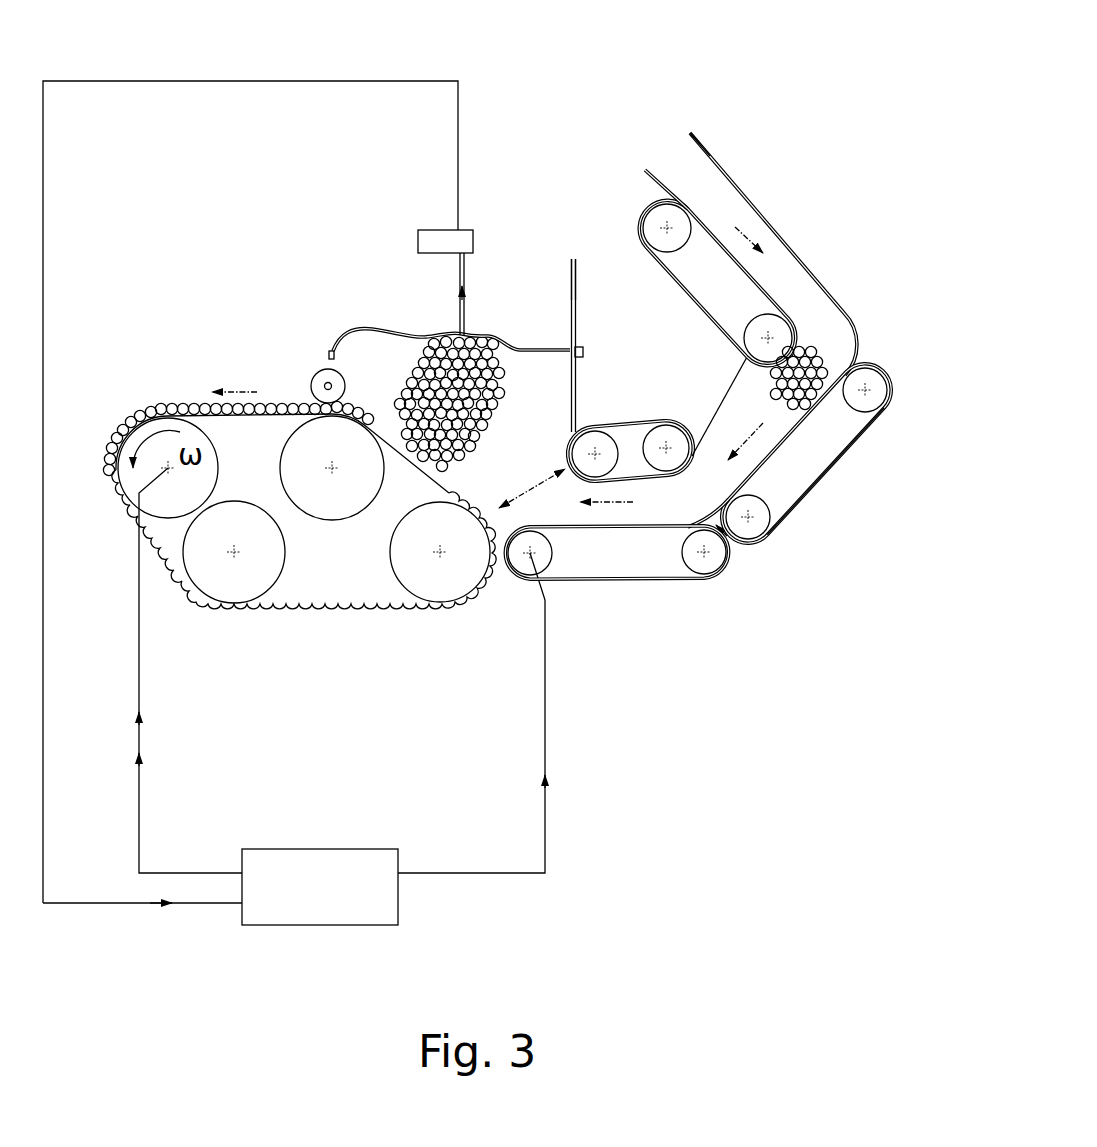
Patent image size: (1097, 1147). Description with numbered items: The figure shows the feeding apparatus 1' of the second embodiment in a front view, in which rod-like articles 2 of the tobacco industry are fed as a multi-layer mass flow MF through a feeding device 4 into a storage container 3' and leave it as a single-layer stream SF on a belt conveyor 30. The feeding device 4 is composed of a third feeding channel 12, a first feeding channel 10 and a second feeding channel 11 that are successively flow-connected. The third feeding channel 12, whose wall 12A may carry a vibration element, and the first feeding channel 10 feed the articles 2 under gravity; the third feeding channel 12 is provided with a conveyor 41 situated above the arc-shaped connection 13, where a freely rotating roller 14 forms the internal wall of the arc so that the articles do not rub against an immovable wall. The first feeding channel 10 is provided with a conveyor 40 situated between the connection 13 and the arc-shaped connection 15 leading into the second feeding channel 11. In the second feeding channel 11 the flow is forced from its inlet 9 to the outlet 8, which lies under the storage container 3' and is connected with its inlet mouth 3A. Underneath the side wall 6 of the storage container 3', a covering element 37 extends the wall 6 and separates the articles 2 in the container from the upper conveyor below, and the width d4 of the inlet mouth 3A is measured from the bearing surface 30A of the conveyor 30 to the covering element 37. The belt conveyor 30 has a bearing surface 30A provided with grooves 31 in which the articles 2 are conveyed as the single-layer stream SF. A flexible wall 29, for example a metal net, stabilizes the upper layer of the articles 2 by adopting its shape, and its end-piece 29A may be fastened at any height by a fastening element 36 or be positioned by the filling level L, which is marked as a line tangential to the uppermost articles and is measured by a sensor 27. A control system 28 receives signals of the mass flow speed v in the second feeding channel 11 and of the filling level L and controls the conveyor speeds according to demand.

The feeding apparatus 1' is at (250, 492).
The single-layer stream SF is at (290, 393).
The storage container 3' is at (423, 238).
The flexible wall 29 is at (338, 333).
The rod-like articles 2 is at (433, 337).
The sensor 27 is at (448, 230).
The filling level line L is at (487, 335).
The end-piece of the flexible wall 29A is at (565, 347).
The side wall 6 is at (578, 258).
The fastening element 36 is at (578, 347).
The inlet mouth 3A is at (545, 466).
The covering element 37 is at (576, 428).
The mass flow speed v is at (607, 502).
The width of the inlet mouth d4 is at (526, 486).
The conveyor 41 is at (637, 198).
The wall 12A is at (663, 190).
The third feeding channel 12 is at (732, 163).
The mass flow MF is at (752, 238).
The feeding device 4 is at (800, 163).
The roller 14 is at (785, 340).
The connection 13 is at (858, 318).
The first feeding channel 10 is at (797, 445).
The conveyor 40 is at (817, 494).
The connection 15 is at (723, 537).
The outlet 8 is at (568, 520).
The inlet 9 is at (677, 520).
The second feeding channel 11 is at (638, 520).
The grooves 31 is at (282, 612).
The bearing surface 30A is at (364, 624).
The belt conveyor 30 is at (449, 628).
The control system 28 is at (347, 901).